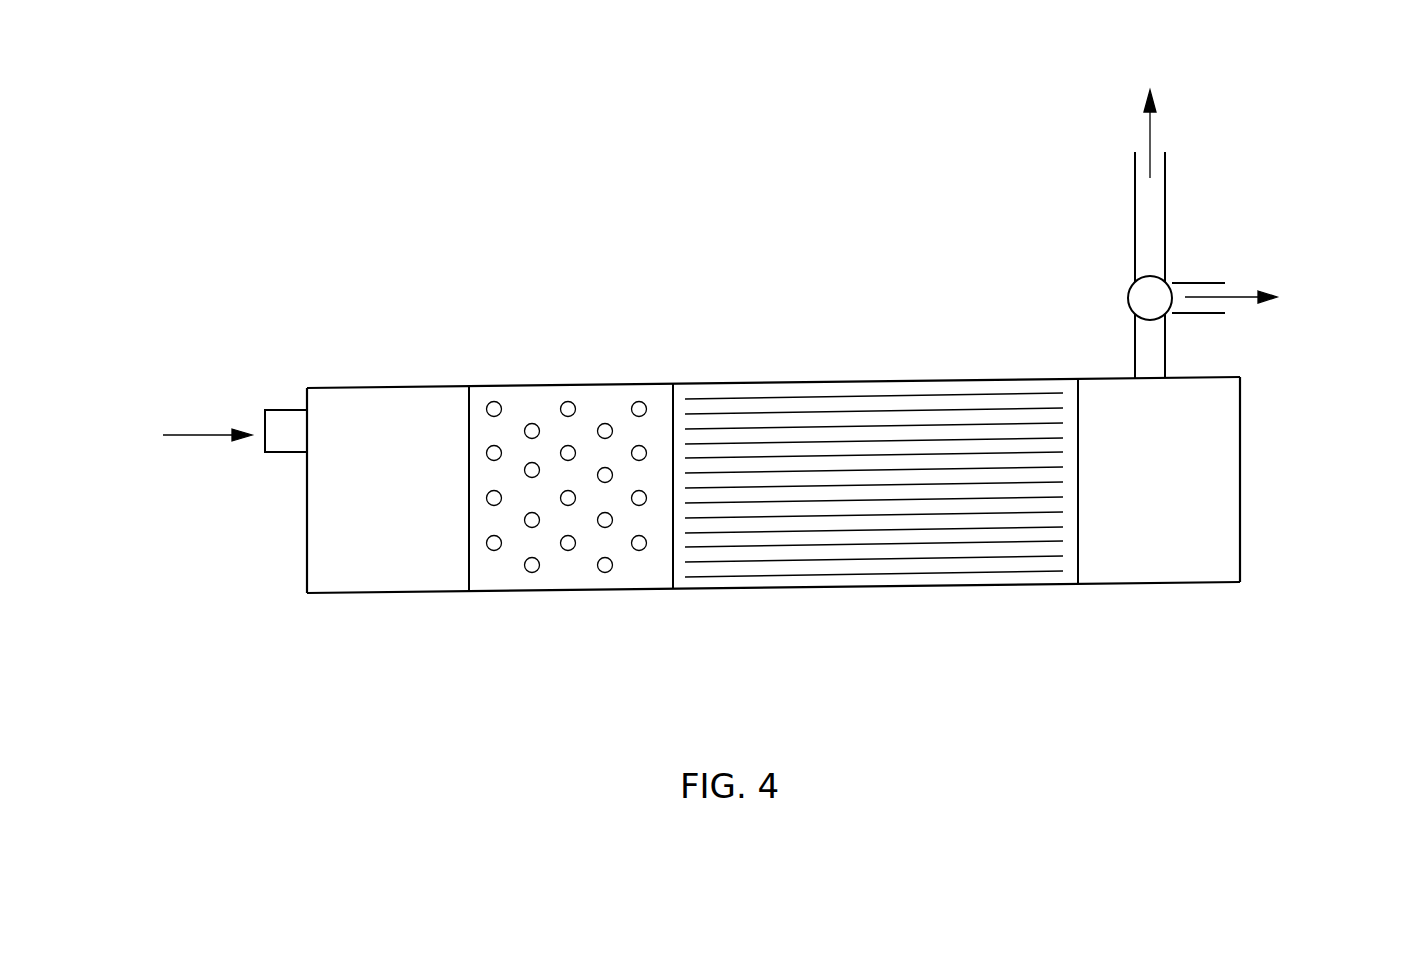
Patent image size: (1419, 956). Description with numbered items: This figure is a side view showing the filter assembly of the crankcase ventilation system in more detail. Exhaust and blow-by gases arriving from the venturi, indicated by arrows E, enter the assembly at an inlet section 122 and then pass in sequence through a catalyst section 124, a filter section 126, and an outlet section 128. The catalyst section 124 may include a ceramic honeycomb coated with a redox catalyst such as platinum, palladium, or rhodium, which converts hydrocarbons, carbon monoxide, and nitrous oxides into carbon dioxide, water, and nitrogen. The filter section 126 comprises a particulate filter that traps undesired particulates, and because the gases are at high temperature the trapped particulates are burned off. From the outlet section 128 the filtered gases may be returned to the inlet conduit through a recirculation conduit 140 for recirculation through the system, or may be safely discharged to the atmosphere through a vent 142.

The arrows indicating gas flow to filter assembly E is at (193, 435).
The inlet section 122 is at (415, 593).
The catalyst section 124 is at (607, 593).
The filter section 126 is at (923, 587).
The outlet section 128 is at (1188, 582).
The recirculation conduit 140 is at (1133, 217).
The vent 142 is at (1195, 283).